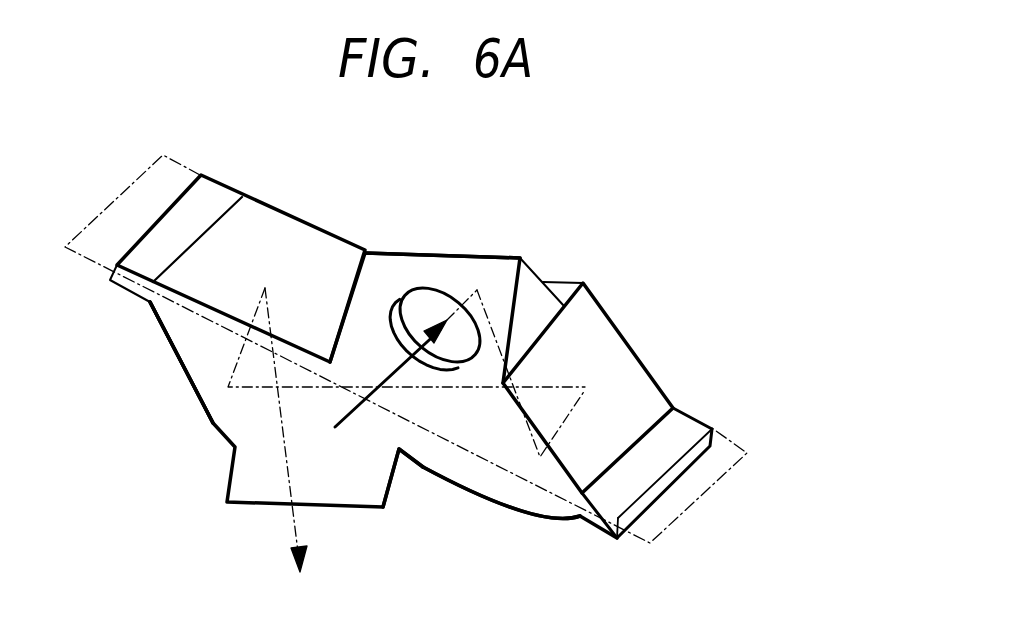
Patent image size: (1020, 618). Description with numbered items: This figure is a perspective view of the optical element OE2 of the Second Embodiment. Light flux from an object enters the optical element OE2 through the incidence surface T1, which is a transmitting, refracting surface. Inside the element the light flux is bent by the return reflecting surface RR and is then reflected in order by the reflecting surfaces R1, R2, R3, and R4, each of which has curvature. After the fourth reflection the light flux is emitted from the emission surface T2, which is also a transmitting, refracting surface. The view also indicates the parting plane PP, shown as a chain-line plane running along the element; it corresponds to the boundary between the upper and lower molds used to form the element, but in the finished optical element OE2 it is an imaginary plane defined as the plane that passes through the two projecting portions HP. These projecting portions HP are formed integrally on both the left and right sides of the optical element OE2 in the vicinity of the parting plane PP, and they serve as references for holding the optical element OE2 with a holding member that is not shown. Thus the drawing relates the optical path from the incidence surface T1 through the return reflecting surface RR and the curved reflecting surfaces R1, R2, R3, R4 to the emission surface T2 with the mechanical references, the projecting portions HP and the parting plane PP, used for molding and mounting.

The optical element OE2 is at (645, 305).
The reflecting surface R4 is at (268, 222).
The return reflecting surface RR is at (477, 256).
The incidence surface T1 is at (430, 298).
The emission surface T2 is at (252, 505).
The reflecting surface R3 is at (173, 352).
The reflecting surface R2 is at (622, 370).
The reflecting surface R1 is at (458, 488).
The projecting portions HP is at (622, 488).
The parting plane PP is at (693, 505).